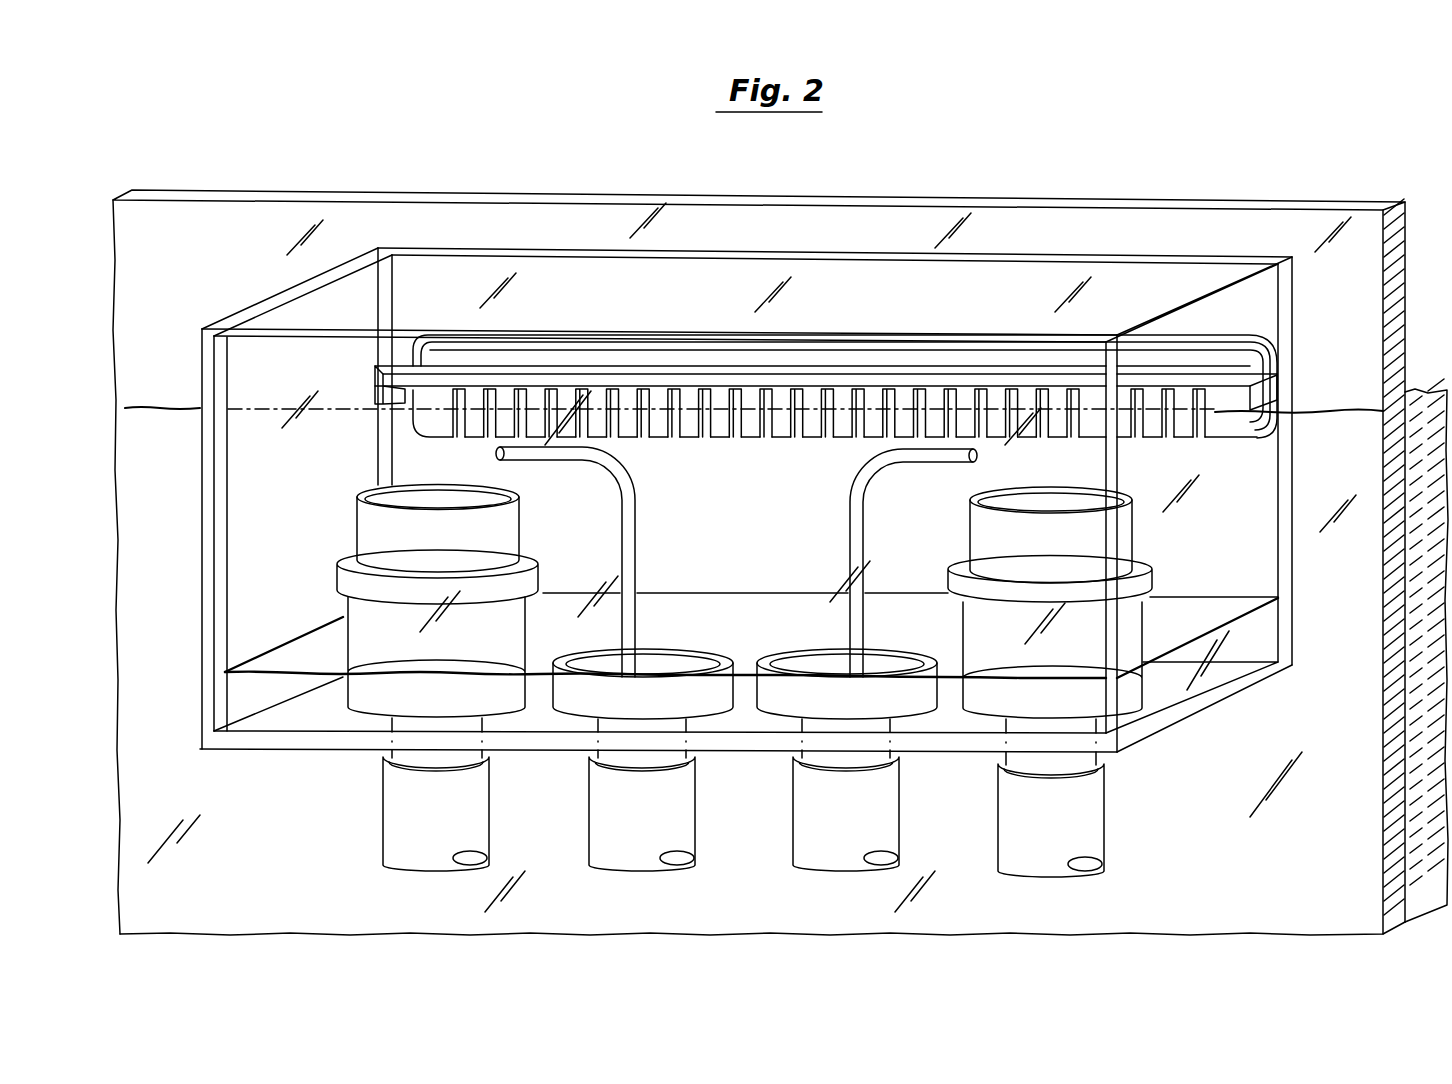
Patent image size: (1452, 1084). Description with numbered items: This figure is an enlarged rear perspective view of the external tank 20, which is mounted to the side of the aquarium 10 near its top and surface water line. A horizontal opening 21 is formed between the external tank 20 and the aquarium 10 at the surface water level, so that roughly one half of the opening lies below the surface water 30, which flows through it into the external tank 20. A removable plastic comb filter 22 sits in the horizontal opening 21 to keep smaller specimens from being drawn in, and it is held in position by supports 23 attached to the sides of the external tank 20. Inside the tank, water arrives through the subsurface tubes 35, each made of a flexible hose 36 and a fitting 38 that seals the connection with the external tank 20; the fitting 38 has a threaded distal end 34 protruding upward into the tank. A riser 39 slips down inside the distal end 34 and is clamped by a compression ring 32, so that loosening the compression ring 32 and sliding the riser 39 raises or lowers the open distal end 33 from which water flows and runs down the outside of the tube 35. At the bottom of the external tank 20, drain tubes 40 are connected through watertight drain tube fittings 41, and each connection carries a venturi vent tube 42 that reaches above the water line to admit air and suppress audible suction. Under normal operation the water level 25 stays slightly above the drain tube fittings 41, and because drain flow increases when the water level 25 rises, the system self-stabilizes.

The aquarium 10 is at (347, 197).
The external tank 20 is at (262, 303).
The horizontal opening 21 is at (1258, 335).
The comb filter 22 is at (713, 437).
The supports 23 is at (370, 388).
The water level 25 is at (265, 672).
The surface water 30 is at (173, 405).
The compression ring 32 is at (345, 575).
The distal end 33 is at (370, 492).
The threaded distal end 34 is at (370, 637).
The subsurface tube 35 is at (383, 840).
The flexible hose 36 is at (420, 810).
The fitting 38 is at (478, 723).
The riser 39 is at (500, 535).
The drain tube 40 is at (820, 815).
The drain tube fitting 41 is at (795, 662).
The venturi vent tube 42 is at (852, 540).